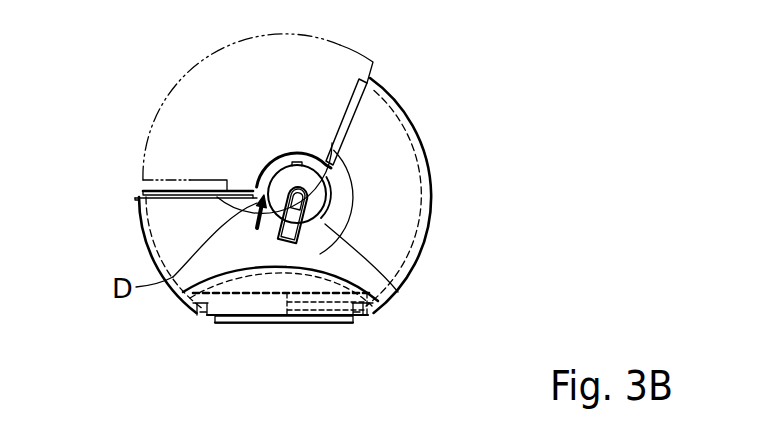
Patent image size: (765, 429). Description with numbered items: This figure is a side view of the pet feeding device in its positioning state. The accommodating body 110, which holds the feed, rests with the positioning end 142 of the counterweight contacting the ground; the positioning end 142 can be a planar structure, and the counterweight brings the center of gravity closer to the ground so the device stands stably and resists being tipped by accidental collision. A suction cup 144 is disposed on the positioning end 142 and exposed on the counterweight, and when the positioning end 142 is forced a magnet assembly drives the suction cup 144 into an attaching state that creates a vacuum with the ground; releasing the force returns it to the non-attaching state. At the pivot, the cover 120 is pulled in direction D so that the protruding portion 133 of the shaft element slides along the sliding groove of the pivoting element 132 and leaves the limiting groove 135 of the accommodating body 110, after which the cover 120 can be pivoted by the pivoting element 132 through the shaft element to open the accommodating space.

The accommodating body 110 is at (137, 213).
The cover 120 is at (186, 90).
The pivoting element 132 is at (320, 183).
The protruding portion 133 is at (303, 208).
The limiting groove 135 is at (303, 239).
The positioning end 142 is at (352, 323).
The suction cup 144 is at (242, 323).